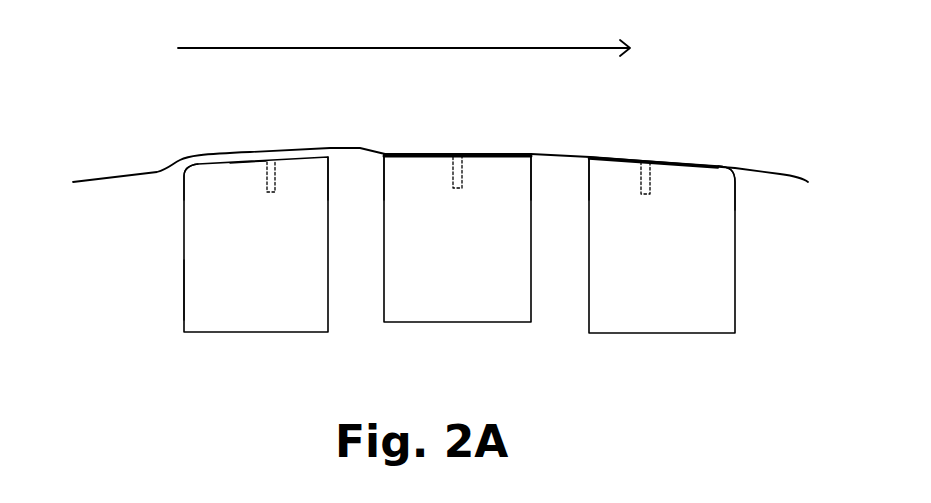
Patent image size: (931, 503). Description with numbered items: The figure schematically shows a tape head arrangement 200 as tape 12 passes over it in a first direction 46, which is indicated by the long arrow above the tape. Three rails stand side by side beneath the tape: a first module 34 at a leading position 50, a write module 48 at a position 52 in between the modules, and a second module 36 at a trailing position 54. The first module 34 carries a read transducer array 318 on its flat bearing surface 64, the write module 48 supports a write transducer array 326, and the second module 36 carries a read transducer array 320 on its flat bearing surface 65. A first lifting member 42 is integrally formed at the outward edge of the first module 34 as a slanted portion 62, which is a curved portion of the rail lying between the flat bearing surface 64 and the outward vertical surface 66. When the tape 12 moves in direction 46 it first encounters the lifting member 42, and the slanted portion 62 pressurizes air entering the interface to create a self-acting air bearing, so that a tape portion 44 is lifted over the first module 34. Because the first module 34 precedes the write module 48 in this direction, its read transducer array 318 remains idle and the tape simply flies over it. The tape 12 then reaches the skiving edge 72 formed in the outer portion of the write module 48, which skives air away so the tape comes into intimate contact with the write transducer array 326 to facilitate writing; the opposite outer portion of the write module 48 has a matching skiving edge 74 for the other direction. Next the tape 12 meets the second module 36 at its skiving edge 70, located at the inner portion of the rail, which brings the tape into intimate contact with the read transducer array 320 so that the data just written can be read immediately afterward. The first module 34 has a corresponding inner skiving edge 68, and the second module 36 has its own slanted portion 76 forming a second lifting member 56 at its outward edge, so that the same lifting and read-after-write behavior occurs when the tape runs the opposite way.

The tape 12 is at (158, 172).
The first direction 46 is at (250, 47).
The tape portion 44 is at (221, 141).
The first module 34 is at (328, 315).
The write module 48 is at (531, 312).
The second module 36 is at (735, 325).
The read transducer array 318 is at (276, 190).
The write transducer array 326 is at (463, 185).
The read transducer array 320 is at (651, 193).
The slanted portion 62 is at (185, 173).
The flat bearing surface 64 is at (259, 164).
The outward vertical surface 66 is at (184, 303).
The skiving edge 68 is at (328, 173).
The skiving edge 72 is at (384, 173).
The skiving edge 74 is at (531, 170).
The skiving edge 70 is at (589, 170).
The flat bearing surface 65 is at (685, 168).
The slanted portion 76 is at (728, 170).
The first lifting member 42 is at (160, 236).
The second lifting member 56 is at (781, 231).
The tape head arrangement 200 is at (131, 354).
The leading position 50 is at (263, 345).
The position 52 is at (457, 337).
The trailing position 54 is at (659, 340).